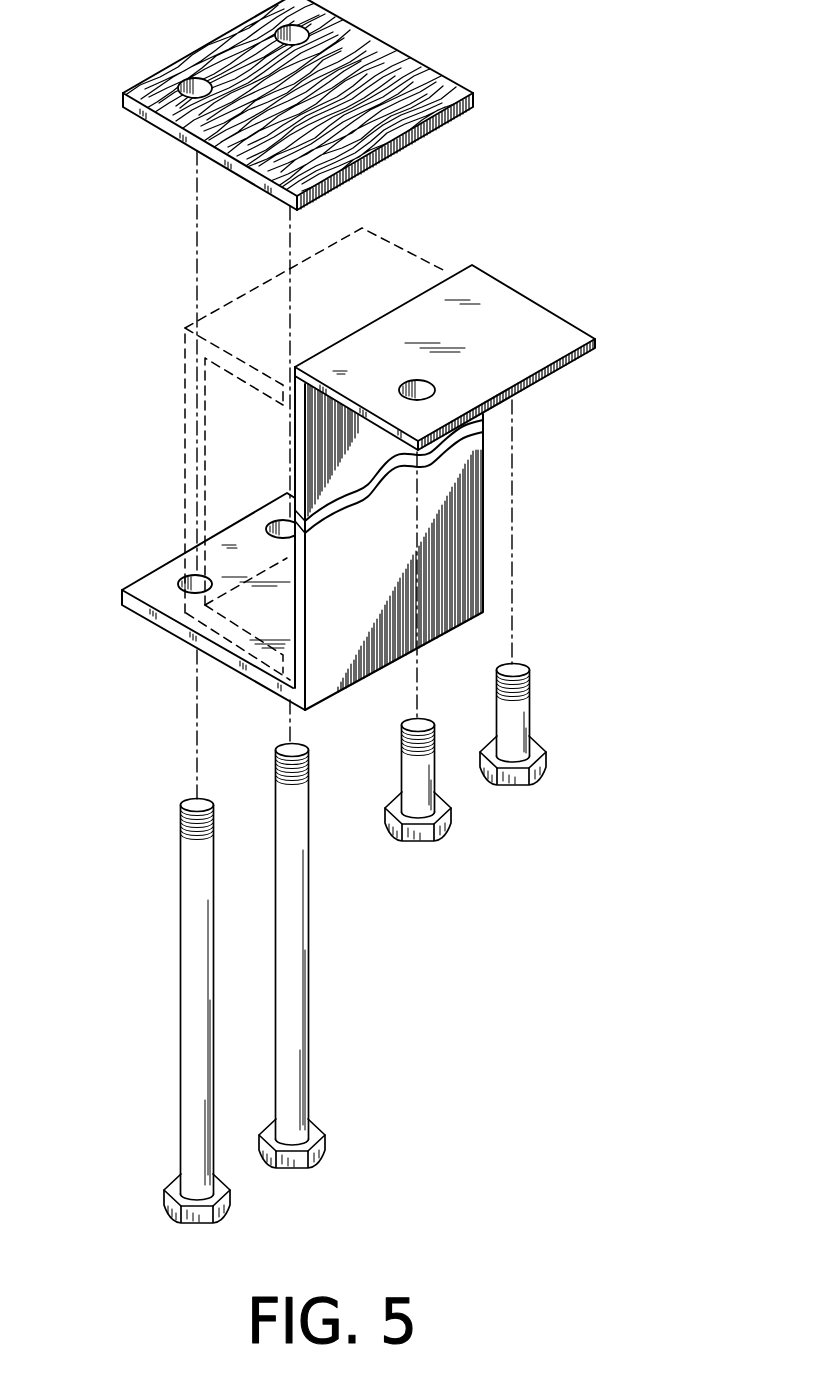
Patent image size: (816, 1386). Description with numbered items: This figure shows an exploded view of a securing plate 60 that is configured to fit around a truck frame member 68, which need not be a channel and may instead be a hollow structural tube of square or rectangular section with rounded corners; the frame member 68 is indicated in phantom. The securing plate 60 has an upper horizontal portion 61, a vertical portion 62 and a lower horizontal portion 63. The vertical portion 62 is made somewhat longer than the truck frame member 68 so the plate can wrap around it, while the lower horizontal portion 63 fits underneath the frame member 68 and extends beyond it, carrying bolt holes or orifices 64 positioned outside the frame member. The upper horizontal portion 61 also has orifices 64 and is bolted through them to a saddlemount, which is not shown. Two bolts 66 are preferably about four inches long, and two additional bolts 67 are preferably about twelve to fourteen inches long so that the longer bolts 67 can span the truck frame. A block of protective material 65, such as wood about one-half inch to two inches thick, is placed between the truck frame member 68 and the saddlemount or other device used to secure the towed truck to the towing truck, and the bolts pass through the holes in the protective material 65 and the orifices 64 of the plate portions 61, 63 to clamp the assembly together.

The securing plate 60 is at (562, 192).
The horizontal portion 61 is at (557, 308).
The vertical portion 62 is at (482, 493).
The horizontal portion 63 is at (153, 620).
The bolt holes or orifices 64 is at (521, 318).
The protective material 65 is at (417, 63).
The bolts 66 is at (530, 720).
The bolts 67 is at (180, 905).
The truck frame member 68 is at (185, 418).